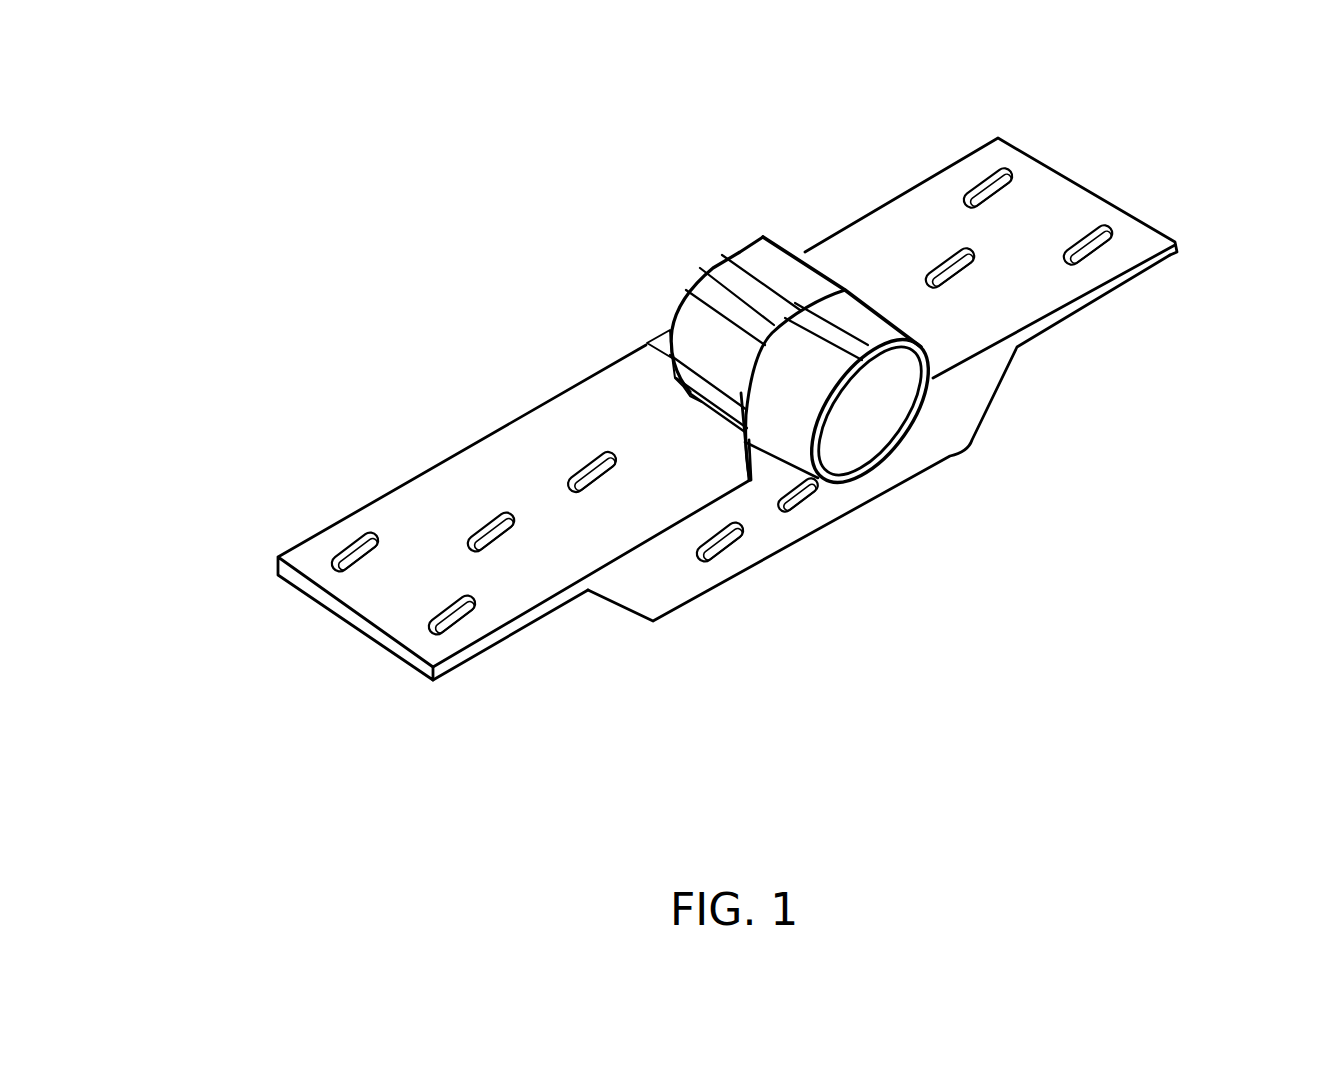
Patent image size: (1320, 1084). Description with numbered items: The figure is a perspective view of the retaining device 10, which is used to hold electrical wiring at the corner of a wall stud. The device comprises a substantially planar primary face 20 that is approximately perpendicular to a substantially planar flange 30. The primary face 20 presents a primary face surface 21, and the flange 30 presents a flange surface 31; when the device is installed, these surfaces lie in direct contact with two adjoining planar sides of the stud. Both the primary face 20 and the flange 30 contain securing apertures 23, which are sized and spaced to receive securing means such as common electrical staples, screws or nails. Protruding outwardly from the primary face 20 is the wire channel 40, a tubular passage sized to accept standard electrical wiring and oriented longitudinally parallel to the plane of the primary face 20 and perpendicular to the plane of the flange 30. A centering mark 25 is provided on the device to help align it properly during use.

The retaining device 10 is at (253, 142).
The primary face 20 is at (744, 359).
The primary face surface 21 is at (518, 480).
The securing aperture 23 is at (1100, 233).
The centering mark 25 is at (726, 277).
The flange 30 is at (777, 449).
The flange surface 31 is at (975, 424).
The wire channel 40 is at (865, 421).